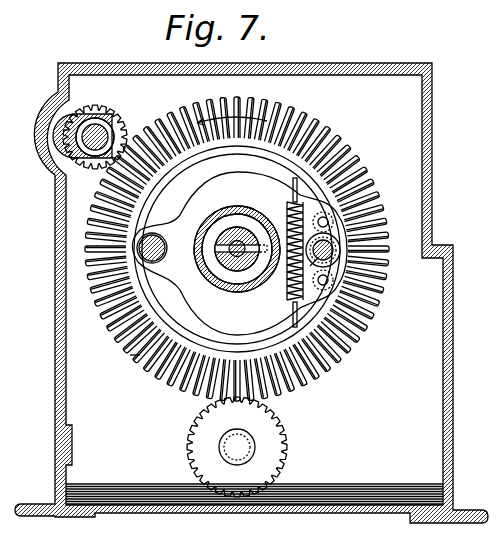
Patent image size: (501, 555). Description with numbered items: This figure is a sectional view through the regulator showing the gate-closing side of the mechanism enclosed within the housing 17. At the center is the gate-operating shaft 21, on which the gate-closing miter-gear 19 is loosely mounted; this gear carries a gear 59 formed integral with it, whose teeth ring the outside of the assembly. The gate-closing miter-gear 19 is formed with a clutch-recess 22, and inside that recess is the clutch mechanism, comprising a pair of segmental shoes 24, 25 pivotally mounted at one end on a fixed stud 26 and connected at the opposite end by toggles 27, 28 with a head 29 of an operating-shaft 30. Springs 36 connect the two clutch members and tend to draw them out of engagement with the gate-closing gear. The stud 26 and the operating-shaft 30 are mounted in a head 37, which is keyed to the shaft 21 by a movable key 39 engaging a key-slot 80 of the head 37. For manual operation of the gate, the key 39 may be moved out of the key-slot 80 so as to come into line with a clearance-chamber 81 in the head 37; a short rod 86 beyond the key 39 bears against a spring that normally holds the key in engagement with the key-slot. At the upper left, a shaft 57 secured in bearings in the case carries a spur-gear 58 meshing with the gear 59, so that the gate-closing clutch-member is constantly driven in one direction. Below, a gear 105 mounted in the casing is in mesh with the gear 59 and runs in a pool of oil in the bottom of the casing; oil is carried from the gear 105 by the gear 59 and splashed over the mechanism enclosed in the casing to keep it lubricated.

The housing 17 is at (432, 163).
The gate-closing miter-gear 19 is at (237, 249).
The gate-operating shaft 21 is at (238, 270).
The clutch-recess 22 is at (140, 356).
The segmental shoe 24 is at (227, 150).
The segmental shoe 25 is at (248, 346).
The fixed stud 26 is at (168, 245).
The toggle 27 is at (334, 223).
The toggle 28 is at (334, 282).
The head 29 is at (341, 250).
The operating-shaft 30 is at (318, 258).
The spring 36 is at (288, 217).
The head 37 is at (167, 252).
The movable key 39 is at (216, 266).
The shaft 57 is at (84, 136).
The spur-gear 58 is at (113, 116).
The gear 59 is at (164, 128).
The key-slot 80 is at (213, 230).
The clearance-chamber 81 is at (243, 214).
The short rod 86 is at (234, 258).
The gear 105 is at (287, 443).